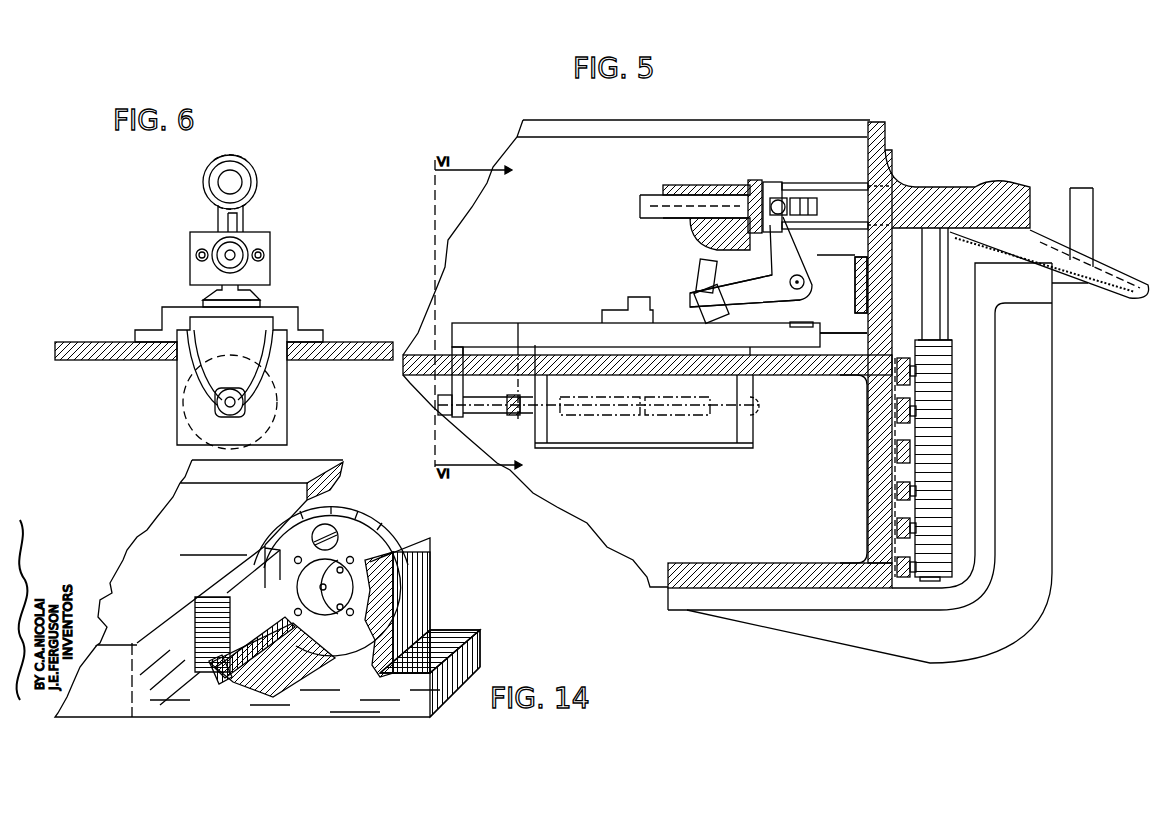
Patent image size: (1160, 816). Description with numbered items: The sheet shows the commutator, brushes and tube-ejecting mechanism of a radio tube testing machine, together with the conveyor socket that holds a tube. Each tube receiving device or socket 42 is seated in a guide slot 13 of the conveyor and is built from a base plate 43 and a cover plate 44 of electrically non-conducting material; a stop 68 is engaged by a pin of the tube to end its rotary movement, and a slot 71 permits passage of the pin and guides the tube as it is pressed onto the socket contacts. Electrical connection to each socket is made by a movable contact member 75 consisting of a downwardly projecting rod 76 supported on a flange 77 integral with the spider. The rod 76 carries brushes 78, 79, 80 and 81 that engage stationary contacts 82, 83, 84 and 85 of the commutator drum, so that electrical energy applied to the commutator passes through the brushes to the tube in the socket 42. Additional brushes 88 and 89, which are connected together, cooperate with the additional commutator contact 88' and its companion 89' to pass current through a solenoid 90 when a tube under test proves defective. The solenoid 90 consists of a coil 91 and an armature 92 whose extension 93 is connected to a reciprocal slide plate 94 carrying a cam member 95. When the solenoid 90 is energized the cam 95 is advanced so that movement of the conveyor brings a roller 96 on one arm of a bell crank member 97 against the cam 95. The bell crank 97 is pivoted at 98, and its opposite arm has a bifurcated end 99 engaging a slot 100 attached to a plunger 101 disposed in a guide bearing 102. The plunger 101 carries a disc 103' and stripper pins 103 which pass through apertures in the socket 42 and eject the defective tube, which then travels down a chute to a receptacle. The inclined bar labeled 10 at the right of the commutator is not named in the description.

In FIG. 5, the lever 10 is at (1118, 270).
In FIG. 14, the guide slot 13 is at (175, 623).
In FIG. 14, the socket 42 is at (403, 521).
In FIG. 14, the base plate 43 is at (373, 518).
In FIG. 14, the cover plate 44 is at (345, 533).
In FIG. 14, the stop 68 is at (222, 680).
In FIG. 14, the slot 71 is at (253, 670).
In FIG. 5, the movable contact member 75 is at (962, 458).
In FIG. 5, the downwardly projecting rod 76 is at (948, 306).
In FIG. 5, the flange 77 is at (940, 187).
In FIG. 5, the brush 78 is at (937, 448).
In FIG. 5, the brush 79 is at (917, 493).
In FIG. 5, the brush 80 is at (918, 530).
In FIG. 5, the brush 81 is at (917, 565).
In FIG. 5, the stationary contact 82 is at (866, 460).
In FIG. 5, the stationary contact 83 is at (866, 500).
In FIG. 5, the stationary contact 84 is at (866, 530).
In FIG. 5, the stationary contact 85 is at (866, 560).
In FIG. 5, the additional brush 88 is at (964, 365).
In FIG. 5, the additional commutator contact 88' is at (869, 385).
In FIG. 5, the additional brush 89 is at (964, 403).
In FIG. 5, the contact 89' is at (872, 421).
In FIG. 5, the solenoid 90 is at (625, 462).
In FIG. 5, the coil 91 is at (715, 437).
In FIG. 5, the armature 92 is at (505, 413).
In FIG. 6, the armature 92 is at (250, 402).
In FIG. 5, the extension 93 is at (452, 382).
In FIG. 6, the extension 93 is at (253, 357).
In FIG. 5, the slide plate 94 is at (553, 323).
In FIG. 6, the slide plate 94 is at (293, 322).
In FIG. 5, the cam member 95 is at (640, 297).
In FIG. 6, the cam member 95 is at (258, 296).
In FIG. 5, the roller 96 is at (700, 266).
In FIG. 6, the roller 96 is at (250, 250).
In FIG. 5, the bell crank member 97 is at (740, 277).
In FIG. 6, the bell crank member 97 is at (245, 219).
In FIG. 5, the pivot 98 is at (807, 282).
In FIG. 5, the bifurcated end 99 is at (805, 205).
In FIG. 5, the slot 100 is at (779, 199).
In FIG. 5, the plunger 101 is at (708, 197).
In FIG. 6, the plunger 101 is at (238, 171).
In FIG. 5, the guide bearing 102 is at (670, 185).
In FIG. 6, the guide bearing 102 is at (256, 178).
In FIG. 5, the stripper pins 103 is at (827, 193).
In FIG. 6, the stripper pins 103 is at (203, 161).
In FIG. 5, the disc 103' is at (759, 190).
In FIG. 6, the disc 103' is at (265, 194).